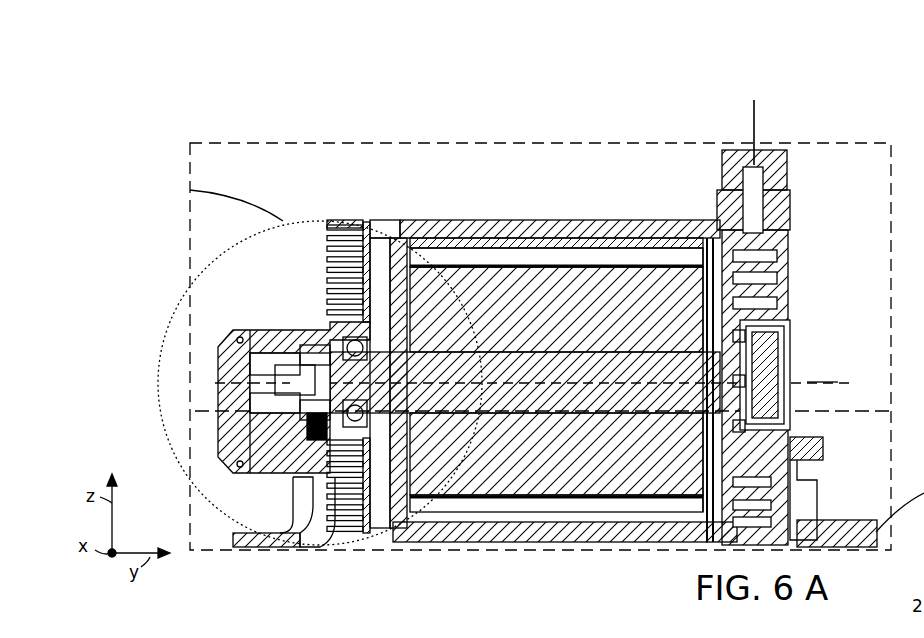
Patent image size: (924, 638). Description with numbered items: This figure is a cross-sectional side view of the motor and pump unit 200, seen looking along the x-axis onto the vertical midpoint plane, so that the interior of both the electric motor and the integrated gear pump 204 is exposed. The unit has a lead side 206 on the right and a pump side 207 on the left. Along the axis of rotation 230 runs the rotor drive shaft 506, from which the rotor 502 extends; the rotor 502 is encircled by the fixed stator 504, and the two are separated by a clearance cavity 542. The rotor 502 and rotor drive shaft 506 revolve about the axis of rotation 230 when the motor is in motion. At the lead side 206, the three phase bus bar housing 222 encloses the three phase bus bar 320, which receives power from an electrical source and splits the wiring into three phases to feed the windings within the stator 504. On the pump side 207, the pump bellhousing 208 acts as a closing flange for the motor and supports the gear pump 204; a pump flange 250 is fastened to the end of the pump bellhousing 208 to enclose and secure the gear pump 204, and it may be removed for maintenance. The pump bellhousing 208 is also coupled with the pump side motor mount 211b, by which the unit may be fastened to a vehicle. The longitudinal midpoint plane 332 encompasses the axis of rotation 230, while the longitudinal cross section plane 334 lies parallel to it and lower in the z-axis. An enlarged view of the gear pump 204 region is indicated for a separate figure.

The motor and pump unit 200 is at (371, 190).
The longitudinal midpoint plane 332 is at (490, 143).
The three phase bus bar housing 222 is at (737, 153).
The three phase bus bar 320 is at (767, 173).
The stator 504 is at (531, 237).
The clearance cavity 542 is at (598, 262).
The rotor 502 is at (638, 288).
The rotor drive shaft 506 is at (668, 352).
The axis of rotation 230 is at (492, 382).
The lead side 206 is at (790, 367).
The pump side 207 is at (231, 377).
The pump bellhousing 208 is at (207, 258).
The gear pump 204 is at (293, 355).
The pump flange 250 is at (215, 393).
The longitudinal cross section plane 334 is at (807, 417).
The pump side motor mount 211b is at (237, 535).